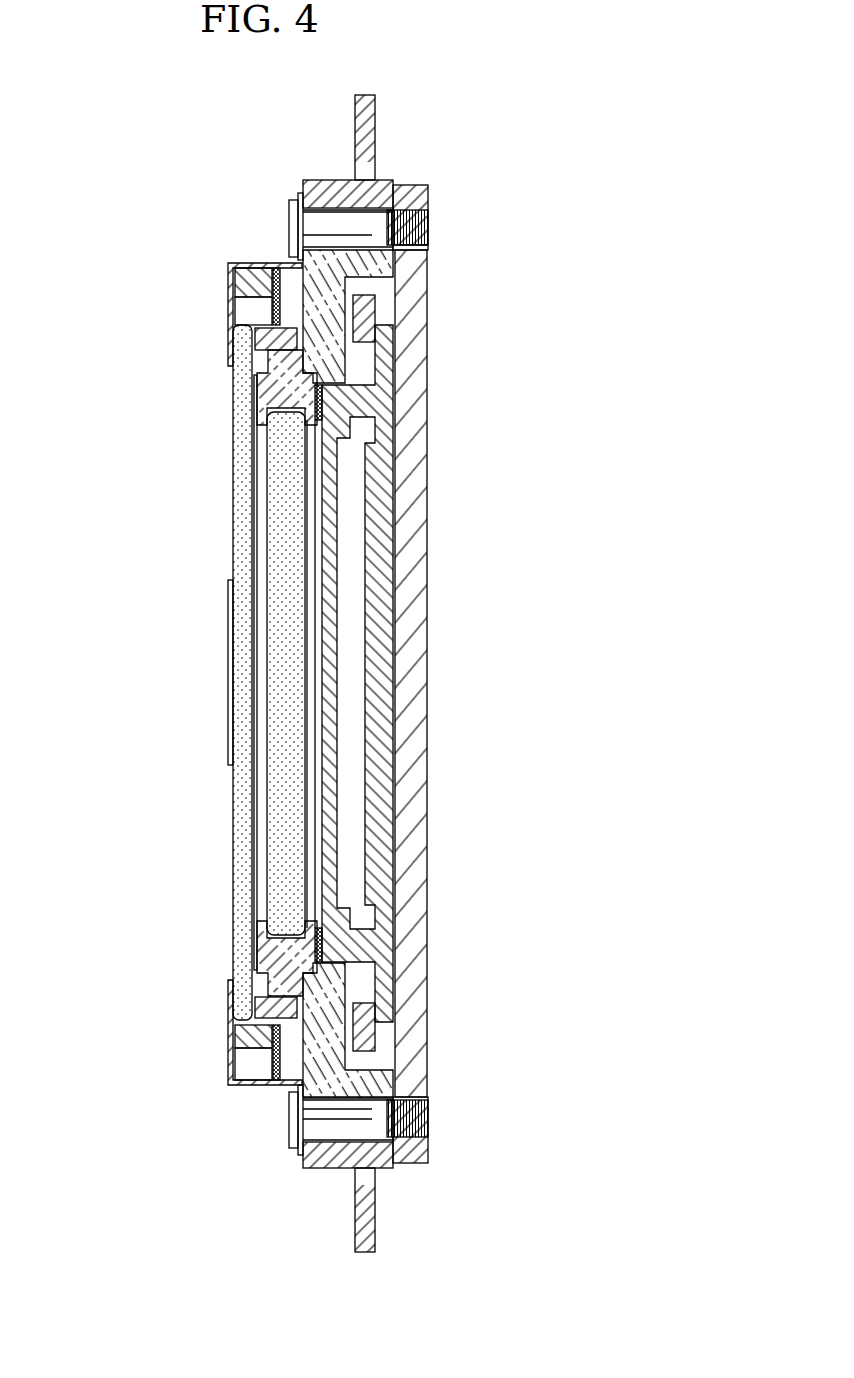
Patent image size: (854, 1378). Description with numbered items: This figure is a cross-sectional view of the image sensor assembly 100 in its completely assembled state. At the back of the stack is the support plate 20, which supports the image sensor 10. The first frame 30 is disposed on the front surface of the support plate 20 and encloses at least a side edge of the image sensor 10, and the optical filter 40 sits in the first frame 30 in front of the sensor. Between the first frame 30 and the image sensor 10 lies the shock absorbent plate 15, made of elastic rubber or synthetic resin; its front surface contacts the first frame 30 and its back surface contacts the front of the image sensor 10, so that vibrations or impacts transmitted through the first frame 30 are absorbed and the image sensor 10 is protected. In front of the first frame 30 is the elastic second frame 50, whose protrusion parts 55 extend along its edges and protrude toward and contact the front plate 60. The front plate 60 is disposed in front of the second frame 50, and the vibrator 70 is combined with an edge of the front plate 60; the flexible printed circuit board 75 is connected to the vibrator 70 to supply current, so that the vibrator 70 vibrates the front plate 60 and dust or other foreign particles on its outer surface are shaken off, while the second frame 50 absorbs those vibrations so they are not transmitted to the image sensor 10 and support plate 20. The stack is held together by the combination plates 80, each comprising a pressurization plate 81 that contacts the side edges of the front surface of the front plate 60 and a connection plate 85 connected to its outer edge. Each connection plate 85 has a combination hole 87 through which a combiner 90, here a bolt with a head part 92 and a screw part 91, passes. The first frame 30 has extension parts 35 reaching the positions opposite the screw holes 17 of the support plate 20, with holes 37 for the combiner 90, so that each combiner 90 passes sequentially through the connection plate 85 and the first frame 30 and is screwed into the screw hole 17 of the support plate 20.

The image sensor assembly 100 is at (62, 138).
The image sensor 10 is at (333, 572).
The shock absorbent plate 15 is at (325, 403).
The screw hole 17 is at (420, 222).
The support plate 20 is at (407, 390).
The first frame 30 is at (335, 323).
The extension part 35 is at (333, 187).
The hole 37 is at (363, 218).
The optical filter 40 is at (280, 455).
The second frame 50 is at (267, 388).
The protrusion part 55 is at (255, 940).
The front plate 60 is at (233, 871).
The vibrator 70 is at (238, 1040).
The flexible printed circuit board 75 is at (273, 1067).
The combination plate 80 is at (203, 152).
The pressurization plate 81 is at (230, 283).
The connection plate 85 is at (300, 191).
The combination hole 87 is at (300, 1110).
The combiner 90 is at (278, 1243).
The screw part 91 is at (332, 1127).
The head part 92 is at (290, 1140).